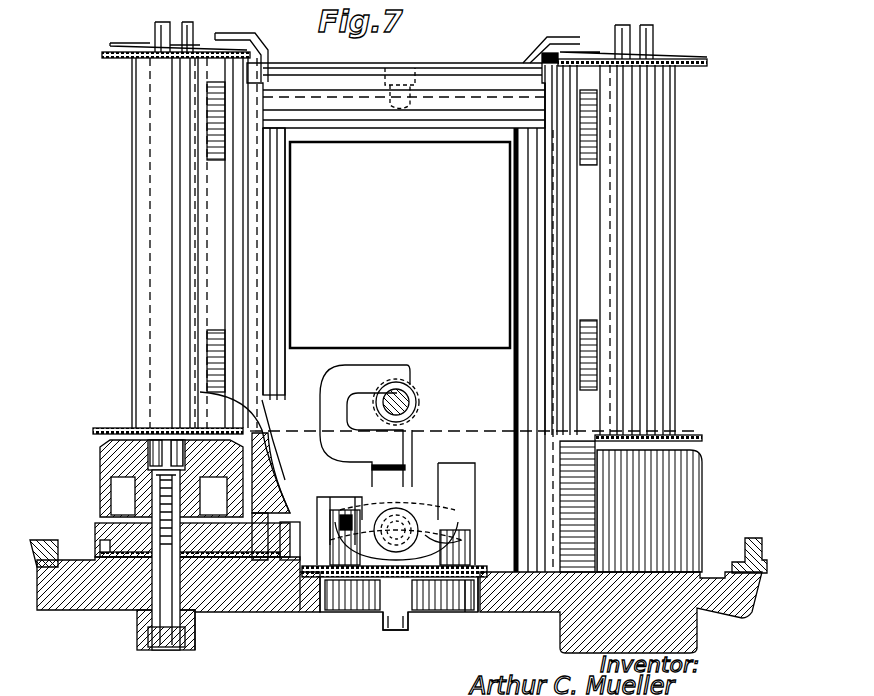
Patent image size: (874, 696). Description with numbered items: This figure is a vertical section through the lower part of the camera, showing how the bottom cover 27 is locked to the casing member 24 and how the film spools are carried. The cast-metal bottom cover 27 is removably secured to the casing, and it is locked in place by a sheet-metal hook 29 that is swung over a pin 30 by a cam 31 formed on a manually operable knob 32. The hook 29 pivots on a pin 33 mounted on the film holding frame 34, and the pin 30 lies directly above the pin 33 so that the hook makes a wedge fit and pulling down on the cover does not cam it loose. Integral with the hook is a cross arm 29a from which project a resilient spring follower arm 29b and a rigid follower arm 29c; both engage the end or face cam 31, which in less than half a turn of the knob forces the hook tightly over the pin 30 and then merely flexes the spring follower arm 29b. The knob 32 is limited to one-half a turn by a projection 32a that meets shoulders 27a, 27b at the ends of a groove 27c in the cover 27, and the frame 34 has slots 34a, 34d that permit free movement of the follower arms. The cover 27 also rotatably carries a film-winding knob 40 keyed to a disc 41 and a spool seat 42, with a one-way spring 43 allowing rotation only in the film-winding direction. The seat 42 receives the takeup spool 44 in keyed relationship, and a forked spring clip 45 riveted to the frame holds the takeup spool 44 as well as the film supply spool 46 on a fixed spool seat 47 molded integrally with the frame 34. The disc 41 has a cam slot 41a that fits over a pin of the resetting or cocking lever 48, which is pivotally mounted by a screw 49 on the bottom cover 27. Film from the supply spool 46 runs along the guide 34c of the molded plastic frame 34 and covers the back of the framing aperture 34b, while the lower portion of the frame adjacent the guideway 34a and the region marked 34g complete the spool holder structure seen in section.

The casing member 24 is at (752, 538).
The bottom cover 27 is at (567, 637).
The shoulder 27a is at (296, 598).
The shoulder 27b is at (490, 578).
The groove 27c is at (470, 612).
The hook 29 is at (385, 450).
The cross arm 29a is at (372, 478).
The spring follower arm 29b is at (335, 515).
The rigid follower arm 29c is at (462, 520).
The pin 30 is at (406, 398).
The cam 31 is at (440, 542).
The knob 32 is at (440, 600).
The projection 32a is at (385, 604).
The pin 33 is at (380, 520).
The film holding frame 34 is at (298, 363).
The slot 34a is at (262, 570).
The framing aperture 34b is at (343, 340).
The guide 34c is at (563, 192).
The slot 34d is at (235, 185).
The frame window 34g is at (510, 295).
The film-winding knob 40 is at (125, 612).
The disc 41 is at (95, 530).
The cam slot 41a is at (100, 546).
The spool seat 42 is at (98, 456).
The one-way spring 43 is at (130, 505).
The takeup spool 44 is at (133, 253).
The forked spring clip 45 is at (275, 60).
The film supply spool 46 is at (690, 437).
The fixed spool seat 47 is at (683, 486).
The cocking lever 48 is at (225, 590).
The screw 49 is at (291, 541).